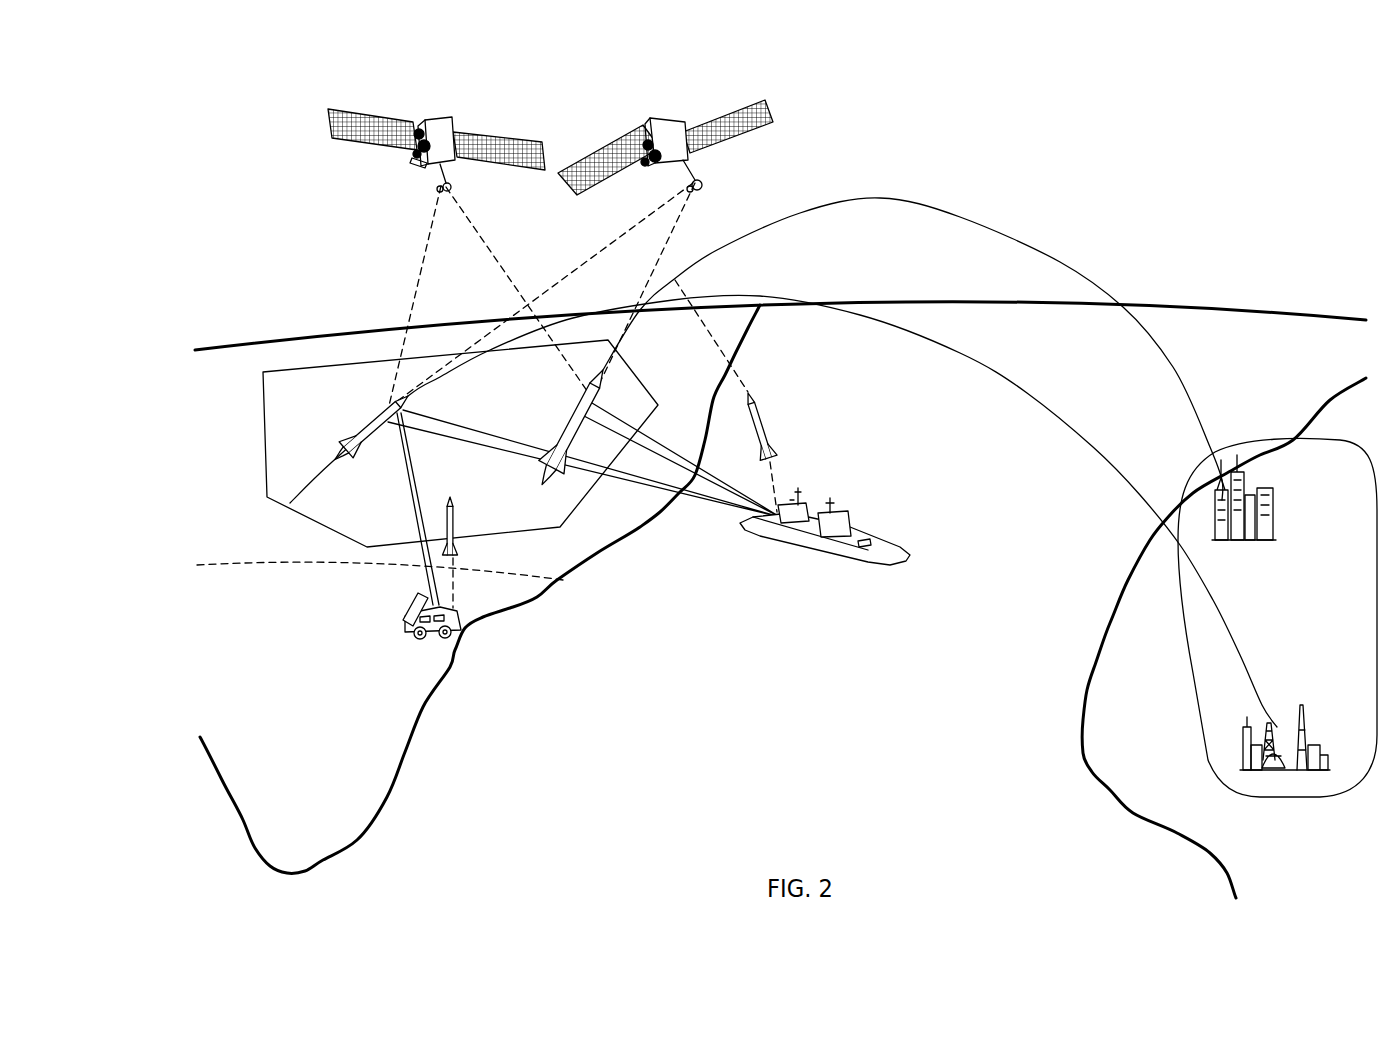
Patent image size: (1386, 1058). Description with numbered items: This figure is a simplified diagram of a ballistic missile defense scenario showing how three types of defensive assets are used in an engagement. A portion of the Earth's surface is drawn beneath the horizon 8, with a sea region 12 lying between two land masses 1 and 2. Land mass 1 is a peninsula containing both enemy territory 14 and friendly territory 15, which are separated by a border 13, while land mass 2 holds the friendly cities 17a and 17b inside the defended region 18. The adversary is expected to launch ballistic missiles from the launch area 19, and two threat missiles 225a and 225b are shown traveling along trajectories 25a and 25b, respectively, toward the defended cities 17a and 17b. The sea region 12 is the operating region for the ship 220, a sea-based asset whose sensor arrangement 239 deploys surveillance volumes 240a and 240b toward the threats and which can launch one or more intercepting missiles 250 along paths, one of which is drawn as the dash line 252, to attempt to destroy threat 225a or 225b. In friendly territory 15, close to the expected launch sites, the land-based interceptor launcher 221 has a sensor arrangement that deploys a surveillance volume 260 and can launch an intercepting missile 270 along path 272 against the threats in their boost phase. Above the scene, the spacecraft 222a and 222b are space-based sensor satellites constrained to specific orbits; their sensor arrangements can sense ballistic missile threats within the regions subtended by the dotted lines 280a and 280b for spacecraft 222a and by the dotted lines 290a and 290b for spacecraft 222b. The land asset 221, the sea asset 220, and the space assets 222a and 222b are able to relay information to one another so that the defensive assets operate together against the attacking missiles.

The land mass 1 is at (657, 540).
The land mass 2 is at (1067, 718).
The horizon 8 is at (1248, 310).
The sea region 12 is at (801, 666).
The border 13 is at (360, 568).
The enemy territory 14 is at (236, 530).
The friendly territory 15 is at (244, 625).
The friendly city 17a is at (1263, 487).
The friendly city 17b is at (1295, 737).
The defended region 18 is at (1311, 607).
The launch area 19 is at (338, 428).
The trajectory 25a is at (1053, 252).
The trajectory 25b is at (1027, 393).
The ship 220 is at (843, 537).
The land-based interceptor launcher 221 is at (407, 605).
The spacecraft 222a is at (438, 117).
The spacecraft 222b is at (660, 122).
The threat missile 225a is at (575, 407).
The threat missile 225b is at (385, 408).
The sensor arrangement 239 is at (773, 530).
The surveillance volume 240a is at (680, 447).
The surveillance volume 240b is at (634, 482).
The intercepting missile 250 is at (765, 418).
The path 252 is at (775, 480).
The surveillance volume 260 is at (400, 488).
The intercepting missile 270 is at (460, 546).
The path 272 is at (457, 590).
The dotted line 280a is at (419, 278).
The dotted line 280b is at (489, 242).
The dotted line 290a is at (580, 266).
The dotted line 290b is at (685, 213).